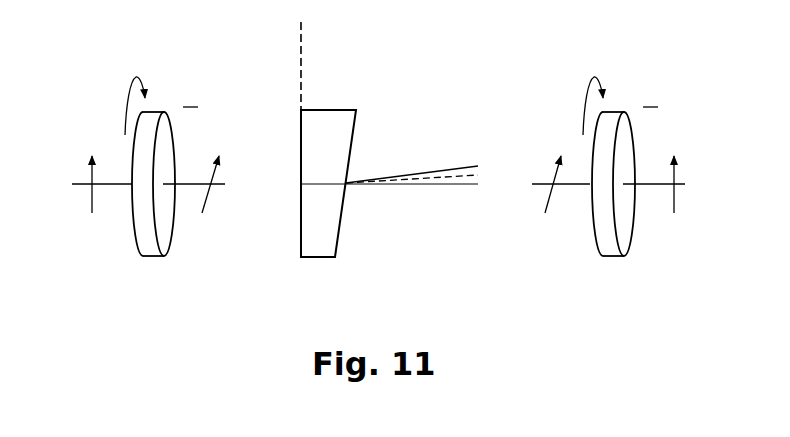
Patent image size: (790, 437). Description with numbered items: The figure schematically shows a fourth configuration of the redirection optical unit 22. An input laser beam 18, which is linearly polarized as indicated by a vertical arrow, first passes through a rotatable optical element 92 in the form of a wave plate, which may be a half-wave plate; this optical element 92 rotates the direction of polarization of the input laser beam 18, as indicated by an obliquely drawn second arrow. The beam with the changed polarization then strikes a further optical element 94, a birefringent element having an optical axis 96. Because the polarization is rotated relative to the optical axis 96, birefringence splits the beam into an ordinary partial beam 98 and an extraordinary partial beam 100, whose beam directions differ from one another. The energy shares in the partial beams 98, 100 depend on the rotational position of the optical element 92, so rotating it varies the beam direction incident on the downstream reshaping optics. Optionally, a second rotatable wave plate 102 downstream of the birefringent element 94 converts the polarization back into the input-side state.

The input laser beam 18 is at (82, 186).
The redirection optical unit 22 is at (446, 93).
The optical element 92 is at (157, 256).
The birefringent element 94 is at (320, 257).
The optical axis 96 is at (302, 38).
The ordinary partial beam 98 is at (420, 176).
The extraordinary partial beam 100 is at (453, 180).
The second rotatable wave plate 102 is at (617, 256).